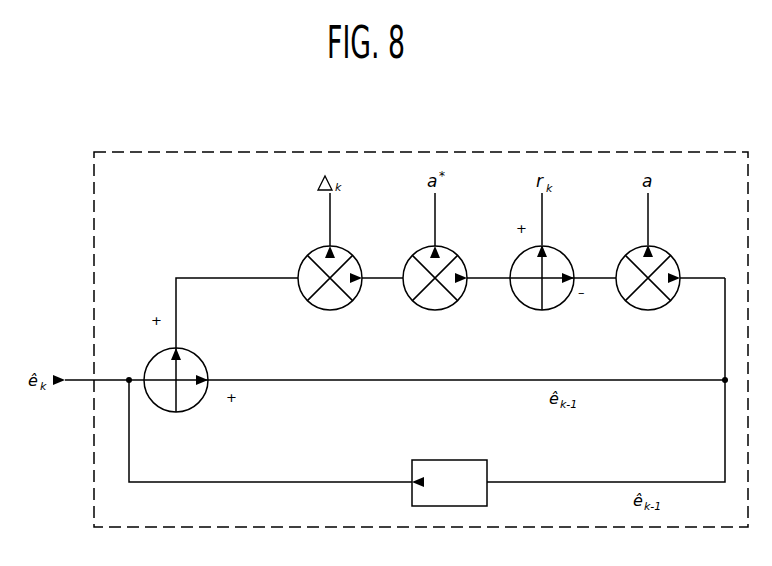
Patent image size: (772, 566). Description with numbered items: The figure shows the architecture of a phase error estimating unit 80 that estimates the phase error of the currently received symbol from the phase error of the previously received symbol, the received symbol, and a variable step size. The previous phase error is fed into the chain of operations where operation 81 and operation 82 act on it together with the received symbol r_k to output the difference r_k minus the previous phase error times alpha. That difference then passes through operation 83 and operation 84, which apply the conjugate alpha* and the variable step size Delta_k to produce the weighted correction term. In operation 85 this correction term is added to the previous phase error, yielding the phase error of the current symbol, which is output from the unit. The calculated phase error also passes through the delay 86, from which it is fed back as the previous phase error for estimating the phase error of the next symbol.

The estimation circuit 80 is at (697, 152).
The operation 81 is at (671, 255).
The operation 82 is at (565, 255).
The operation 83 is at (453, 257).
The operation 84 is at (348, 257).
The operation 85 is at (200, 362).
The delay 86 is at (442, 460).